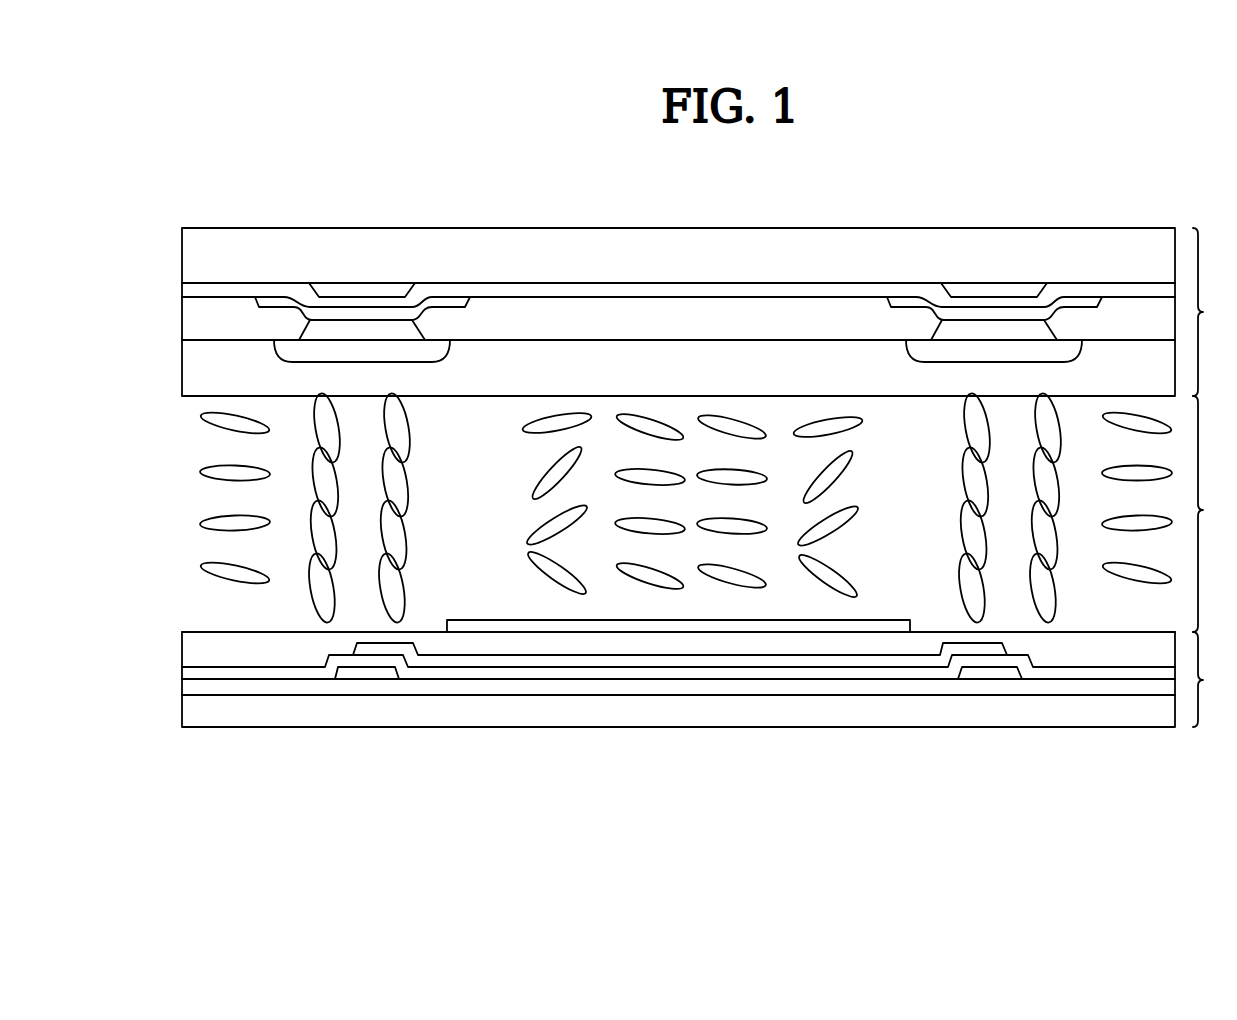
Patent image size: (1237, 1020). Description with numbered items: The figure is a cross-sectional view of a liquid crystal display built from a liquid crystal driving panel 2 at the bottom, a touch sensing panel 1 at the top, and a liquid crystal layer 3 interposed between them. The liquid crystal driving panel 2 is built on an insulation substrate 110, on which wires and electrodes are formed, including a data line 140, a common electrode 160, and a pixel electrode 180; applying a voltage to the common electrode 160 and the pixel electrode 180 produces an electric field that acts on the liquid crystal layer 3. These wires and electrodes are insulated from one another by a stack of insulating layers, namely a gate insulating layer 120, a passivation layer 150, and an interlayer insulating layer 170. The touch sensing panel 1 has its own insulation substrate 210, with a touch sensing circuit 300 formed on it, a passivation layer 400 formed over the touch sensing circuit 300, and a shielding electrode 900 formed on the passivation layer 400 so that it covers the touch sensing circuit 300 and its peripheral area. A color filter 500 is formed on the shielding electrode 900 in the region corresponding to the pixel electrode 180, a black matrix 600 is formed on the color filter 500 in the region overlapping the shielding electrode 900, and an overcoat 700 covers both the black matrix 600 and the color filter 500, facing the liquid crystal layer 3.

The insulation substrate 110 is at (1040, 708).
The gate insulating layer 120 is at (886, 687).
The data line 140 is at (352, 680).
The passivation layer 150 is at (440, 673).
The common electrode 160 is at (535, 650).
The interlayer insulating layer 170 is at (613, 645).
The pixel electrode 180 is at (706, 622).
The insulation substrate 210 is at (1114, 240).
The touch sensing circuit 300 is at (377, 290).
The passivation layer 400 is at (785, 290).
The color filter 500 is at (543, 325).
The black matrix 600 is at (337, 323).
The overcoat 700 is at (647, 358).
The shielding electrode 900 is at (283, 304).
The touch sensing panel 1 is at (1207, 312).
The liquid crystal driving panel 2 is at (1207, 679).
The liquid crystal layer 3 is at (710, 512).